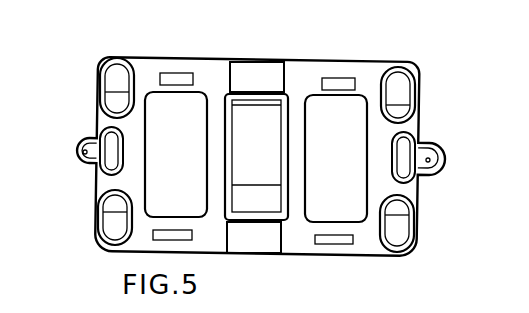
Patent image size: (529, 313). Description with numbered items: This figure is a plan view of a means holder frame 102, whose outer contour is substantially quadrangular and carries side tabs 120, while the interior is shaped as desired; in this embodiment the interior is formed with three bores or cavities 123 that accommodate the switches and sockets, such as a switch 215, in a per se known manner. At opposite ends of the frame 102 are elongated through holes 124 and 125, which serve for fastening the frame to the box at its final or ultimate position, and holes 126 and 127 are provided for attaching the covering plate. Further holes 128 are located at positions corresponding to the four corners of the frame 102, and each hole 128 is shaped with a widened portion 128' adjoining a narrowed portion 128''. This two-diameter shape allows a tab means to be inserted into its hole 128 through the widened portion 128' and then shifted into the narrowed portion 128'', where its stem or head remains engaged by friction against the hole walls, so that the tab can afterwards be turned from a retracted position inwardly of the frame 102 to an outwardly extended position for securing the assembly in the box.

The frame 102 is at (323, 53).
The tabs 120 is at (80, 151).
The bores or cavities 123 is at (186, 161).
The elongated through hole 124 is at (113, 155).
The elongated through hole 125 is at (403, 168).
The hole 126 is at (84, 150).
The hole 127 is at (431, 161).
The hole 128 is at (256, 137).
The widened portion 128' is at (425, 107).
The narrowed portion 128'' is at (422, 87).
The switch 215 is at (268, 198).